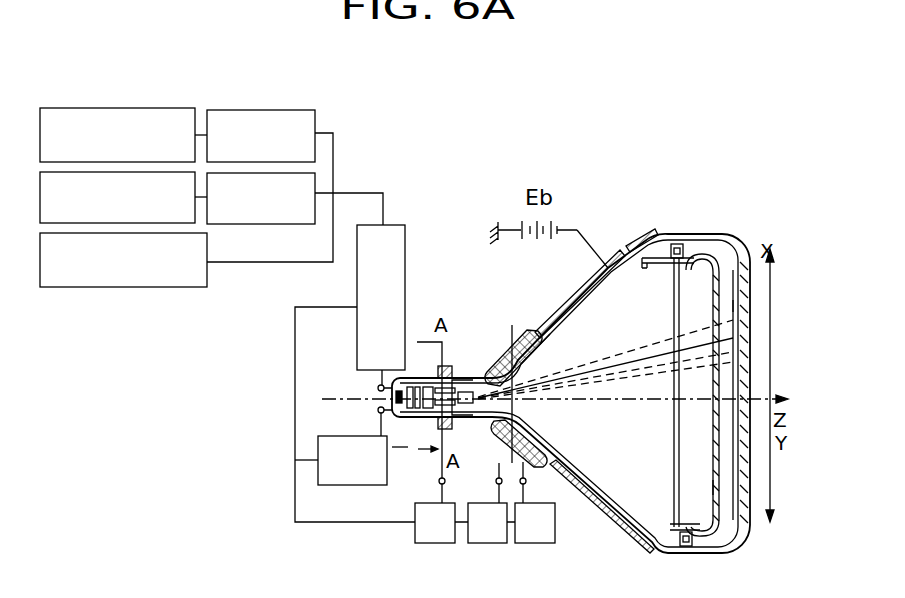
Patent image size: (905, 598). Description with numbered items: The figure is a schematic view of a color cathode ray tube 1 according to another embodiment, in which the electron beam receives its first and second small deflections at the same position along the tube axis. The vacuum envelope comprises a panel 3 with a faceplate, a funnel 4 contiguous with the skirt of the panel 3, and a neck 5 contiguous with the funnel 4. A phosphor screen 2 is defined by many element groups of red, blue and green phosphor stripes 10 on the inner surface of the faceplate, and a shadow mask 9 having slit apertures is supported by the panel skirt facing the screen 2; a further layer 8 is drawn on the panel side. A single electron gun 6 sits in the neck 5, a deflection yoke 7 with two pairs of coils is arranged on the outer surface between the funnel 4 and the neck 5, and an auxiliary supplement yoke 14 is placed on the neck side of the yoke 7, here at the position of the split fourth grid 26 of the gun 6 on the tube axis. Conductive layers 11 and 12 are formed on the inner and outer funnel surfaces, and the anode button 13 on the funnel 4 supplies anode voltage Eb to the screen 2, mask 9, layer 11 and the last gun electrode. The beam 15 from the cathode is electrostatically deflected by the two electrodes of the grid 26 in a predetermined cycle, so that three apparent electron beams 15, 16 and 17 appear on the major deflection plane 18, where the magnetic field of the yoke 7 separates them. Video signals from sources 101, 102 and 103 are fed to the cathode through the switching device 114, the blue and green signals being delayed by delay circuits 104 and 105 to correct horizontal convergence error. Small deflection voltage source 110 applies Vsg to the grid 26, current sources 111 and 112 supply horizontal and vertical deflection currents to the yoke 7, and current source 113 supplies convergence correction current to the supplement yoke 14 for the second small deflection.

The color cathode ray tube 1 is at (687, 217).
The phosphor screen 2 is at (702, 395).
The panel 3 is at (735, 243).
The funnel 4 is at (571, 300).
The neck 5 is at (421, 380).
The electron gun 6 is at (412, 417).
The deflection yoke 7 is at (500, 348).
The phosphor layer 8 is at (713, 486).
The shadow mask 9 is at (713, 437).
The phosphor stripes 10 is at (733, 305).
The conductive layer (inner) 11 is at (549, 338).
The conductive layer (outer) 12 is at (641, 240).
The anode button 13 is at (608, 268).
The auxiliary supplement yoke 14 is at (437, 366).
The electron beam 15 is at (618, 380).
The apparent electron beam 16 is at (616, 358).
The apparent electron beam 17 is at (560, 388).
The deflection plane 18 is at (512, 325).
The fourth grid 26 is at (455, 378).
The video signal source 101 is at (126, 108).
The video signal source 102 is at (38, 212).
The video signal source 103 is at (150, 287).
The delay circuit 104 is at (268, 110).
The delay circuit 105 is at (266, 226).
The voltage source 110 is at (340, 486).
The current source 111 is at (535, 545).
The current source 112 is at (487, 545).
The current source 113 is at (433, 545).
The switching device 114 is at (398, 225).